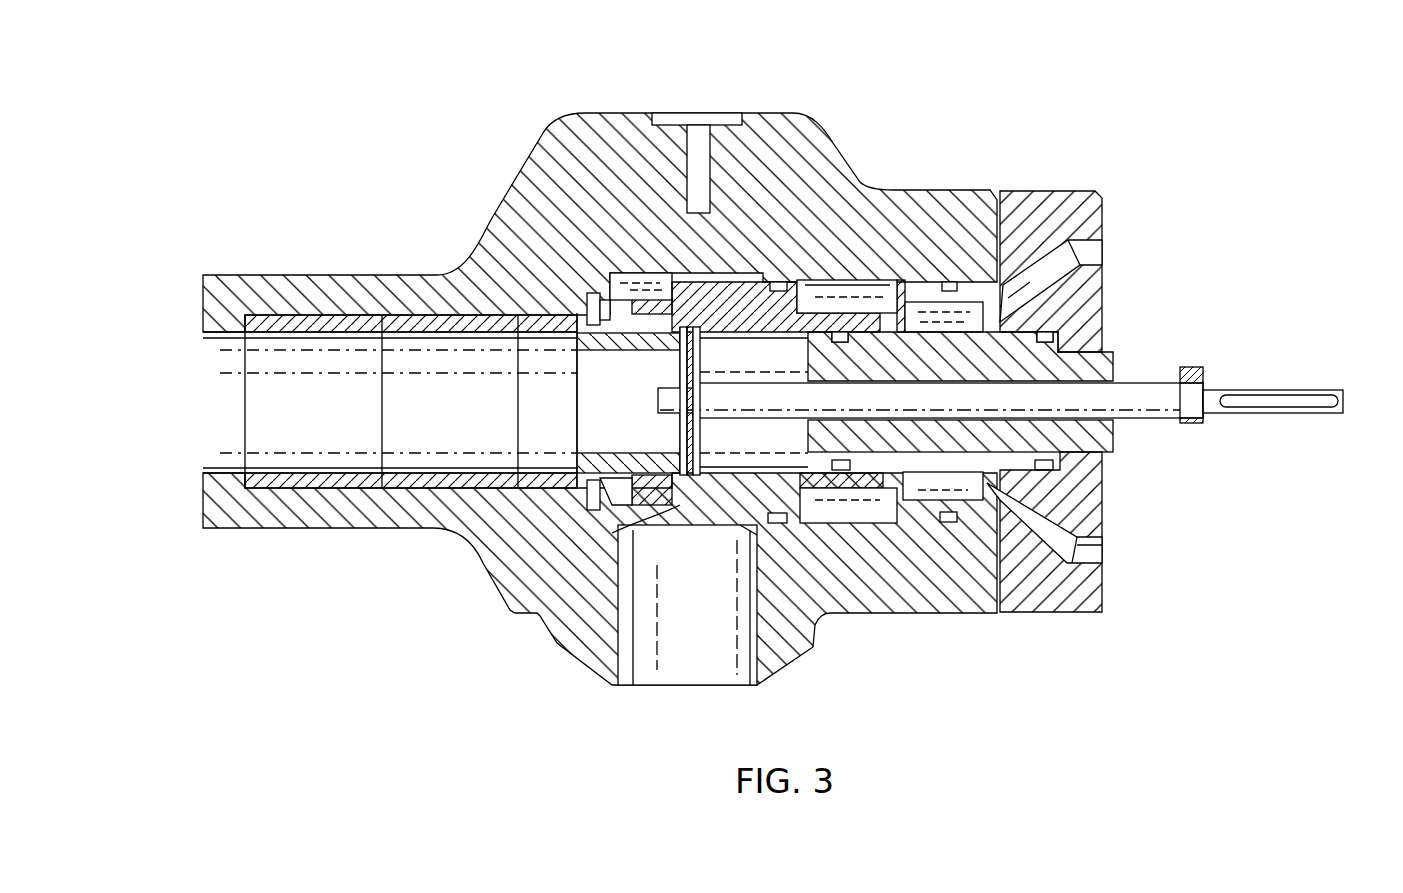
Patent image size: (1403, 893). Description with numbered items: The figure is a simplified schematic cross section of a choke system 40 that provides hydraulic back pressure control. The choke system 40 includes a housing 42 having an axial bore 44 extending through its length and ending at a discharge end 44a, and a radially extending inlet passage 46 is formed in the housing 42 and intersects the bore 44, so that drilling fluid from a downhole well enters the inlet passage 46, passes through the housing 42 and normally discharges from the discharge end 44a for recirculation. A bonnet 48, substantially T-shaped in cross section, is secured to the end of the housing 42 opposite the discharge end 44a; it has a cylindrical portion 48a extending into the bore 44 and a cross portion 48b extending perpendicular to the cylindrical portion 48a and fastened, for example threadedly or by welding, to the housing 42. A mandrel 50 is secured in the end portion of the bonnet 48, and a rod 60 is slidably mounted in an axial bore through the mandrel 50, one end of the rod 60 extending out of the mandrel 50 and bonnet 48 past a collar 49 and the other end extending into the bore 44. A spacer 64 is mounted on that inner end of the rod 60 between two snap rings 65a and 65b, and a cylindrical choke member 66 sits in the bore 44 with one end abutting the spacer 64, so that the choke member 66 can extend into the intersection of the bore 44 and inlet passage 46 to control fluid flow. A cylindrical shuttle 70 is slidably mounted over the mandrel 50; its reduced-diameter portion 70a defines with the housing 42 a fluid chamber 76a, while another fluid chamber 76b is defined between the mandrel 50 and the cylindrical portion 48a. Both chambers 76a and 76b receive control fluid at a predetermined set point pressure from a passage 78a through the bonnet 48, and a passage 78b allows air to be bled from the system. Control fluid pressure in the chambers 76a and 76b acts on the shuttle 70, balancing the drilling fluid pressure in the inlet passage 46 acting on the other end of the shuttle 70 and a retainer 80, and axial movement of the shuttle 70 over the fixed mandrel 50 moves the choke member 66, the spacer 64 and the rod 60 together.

The choke system 40 is at (545, 91).
The housing 42 is at (607, 120).
The axial bore 44 is at (215, 403).
The discharge end 44a is at (218, 460).
The inlet passage 46 is at (720, 665).
The bonnet 48 is at (1056, 186).
The cylindrical portion 48a is at (930, 518).
The cross portion 48b is at (1095, 220).
The shaft collar 49 is at (1190, 425).
The mandrel 50 is at (1112, 426).
The rod 60 is at (1275, 385).
The spacer 64 is at (700, 350).
The snap ring 65a is at (680, 425).
The snap ring 65b is at (700, 430).
The choke member 66 is at (590, 500).
The shuttle 70 is at (750, 280).
The reduced-diameter portion 70a is at (855, 485).
The fluid chamber 76a is at (850, 290).
The fluid chamber 76b is at (930, 310).
The passage 78a is at (1097, 553).
The passage 78b is at (1097, 257).
The retainer 80 is at (650, 510).